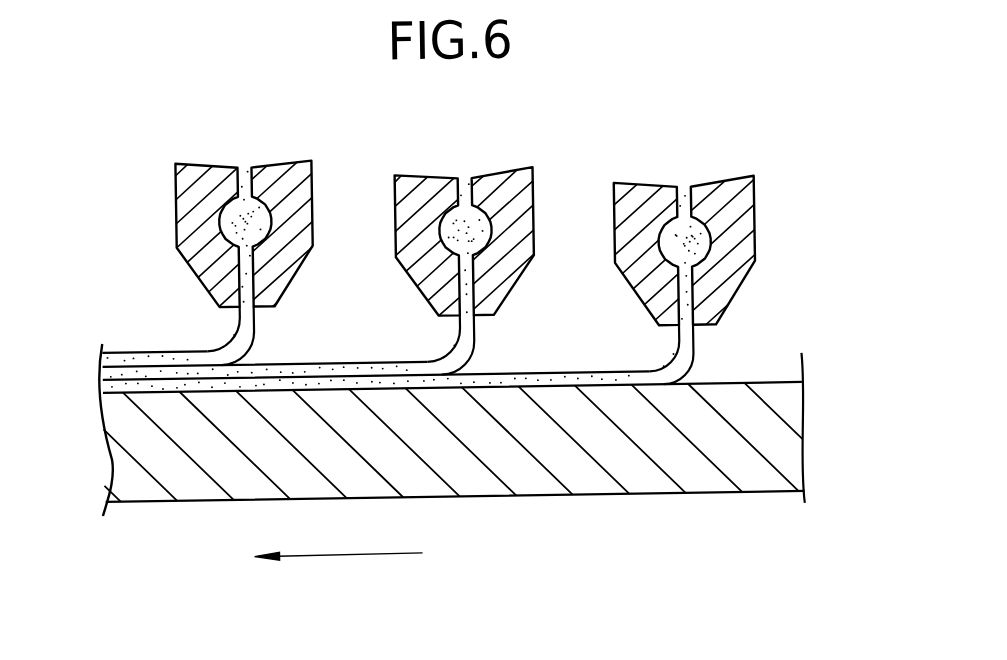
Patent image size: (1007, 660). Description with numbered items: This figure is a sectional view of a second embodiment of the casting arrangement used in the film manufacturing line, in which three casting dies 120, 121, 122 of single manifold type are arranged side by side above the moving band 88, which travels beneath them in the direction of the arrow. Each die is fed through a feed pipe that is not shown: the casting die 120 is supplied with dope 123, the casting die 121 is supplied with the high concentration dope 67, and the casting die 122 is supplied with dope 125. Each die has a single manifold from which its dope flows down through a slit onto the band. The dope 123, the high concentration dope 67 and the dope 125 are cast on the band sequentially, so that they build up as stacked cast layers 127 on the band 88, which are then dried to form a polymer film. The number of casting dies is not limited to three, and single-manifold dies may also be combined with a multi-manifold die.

The substrate 88 is at (701, 503).
The coating layers 127 is at (133, 353).
The casting die 122 is at (316, 203).
The casting die 121 is at (537, 208).
The casting die 120 is at (757, 243).
The dope 125 is at (257, 234).
The high concentration dope 67 is at (477, 250).
The dope 123 is at (696, 258).